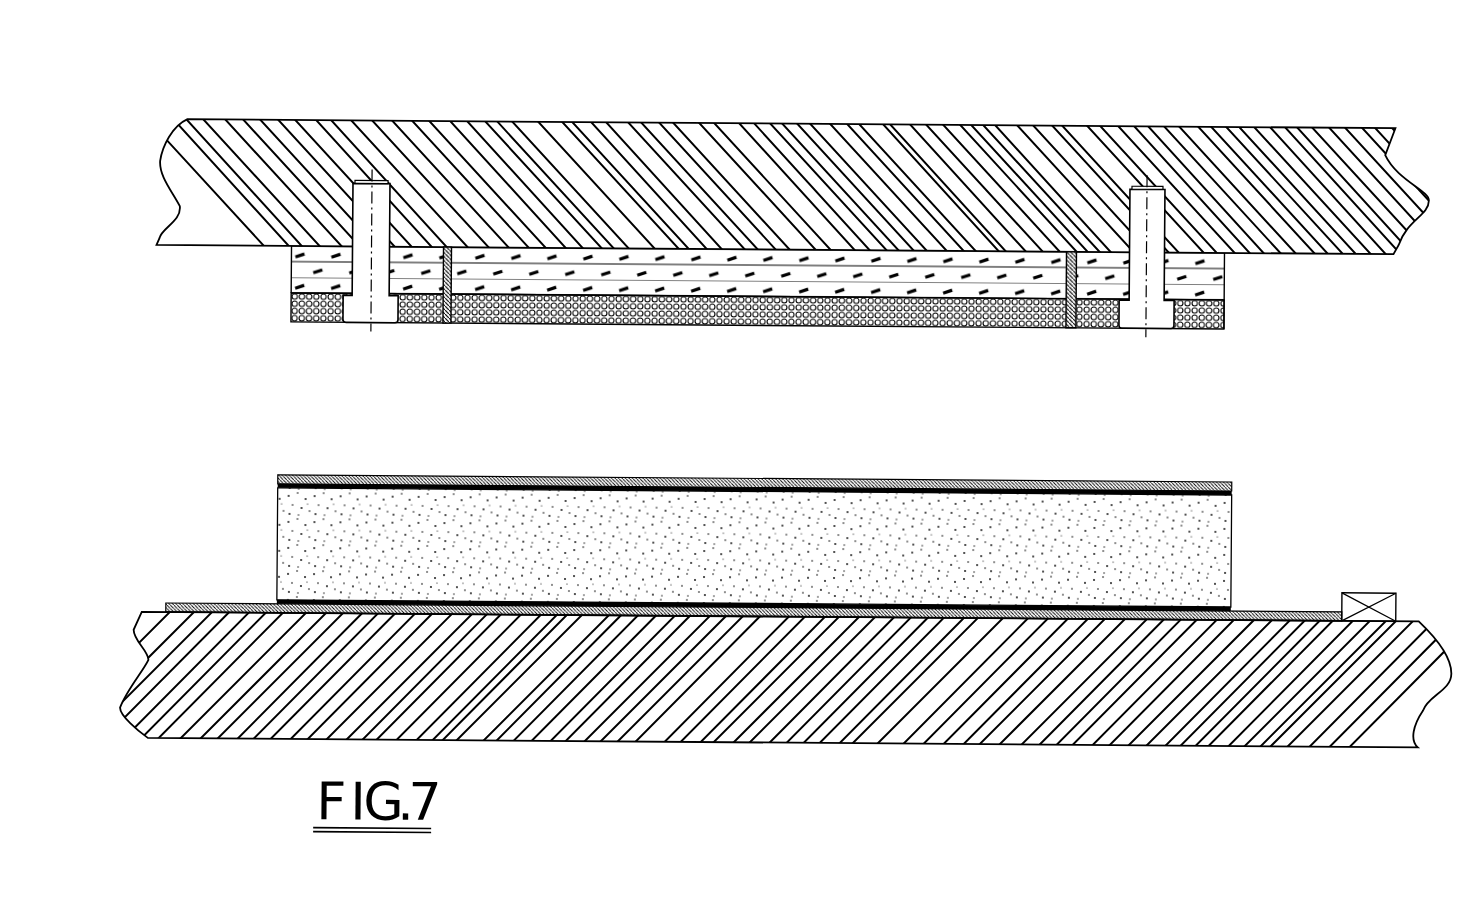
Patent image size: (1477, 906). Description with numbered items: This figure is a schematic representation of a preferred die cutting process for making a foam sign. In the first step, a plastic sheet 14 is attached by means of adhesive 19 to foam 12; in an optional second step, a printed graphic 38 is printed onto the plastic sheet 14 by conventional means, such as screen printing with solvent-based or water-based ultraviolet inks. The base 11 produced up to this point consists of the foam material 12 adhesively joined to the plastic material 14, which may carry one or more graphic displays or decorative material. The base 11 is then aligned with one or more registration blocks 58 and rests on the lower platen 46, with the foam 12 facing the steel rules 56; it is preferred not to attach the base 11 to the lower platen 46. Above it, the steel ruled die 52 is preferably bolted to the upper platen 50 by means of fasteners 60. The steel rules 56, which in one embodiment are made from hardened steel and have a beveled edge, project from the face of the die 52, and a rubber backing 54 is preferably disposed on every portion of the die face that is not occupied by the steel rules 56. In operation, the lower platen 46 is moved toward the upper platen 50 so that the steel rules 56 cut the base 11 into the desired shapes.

The upper platen 50 is at (520, 140).
The steel ruled die 52 is at (1263, 297).
The rubber backing 54 is at (293, 300).
The steel rules 56 is at (445, 325).
The fasteners 60 is at (362, 311).
The lower platen 46 is at (958, 708).
The printed graphic 38 is at (773, 617).
The base 11 is at (1259, 511).
The plastic sheet 14 is at (346, 476).
The adhesive 19 is at (279, 489).
The foam substrate material 12 is at (302, 507).
The registration blocks 58 is at (1363, 588).